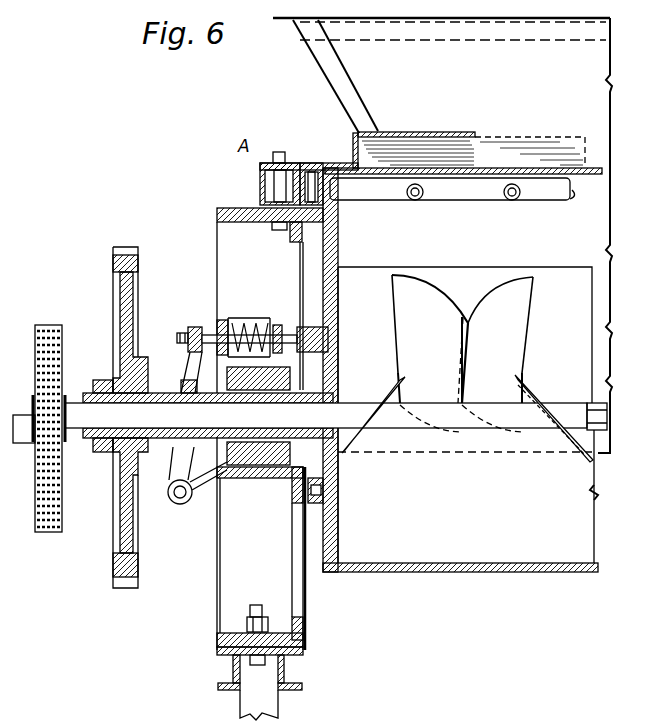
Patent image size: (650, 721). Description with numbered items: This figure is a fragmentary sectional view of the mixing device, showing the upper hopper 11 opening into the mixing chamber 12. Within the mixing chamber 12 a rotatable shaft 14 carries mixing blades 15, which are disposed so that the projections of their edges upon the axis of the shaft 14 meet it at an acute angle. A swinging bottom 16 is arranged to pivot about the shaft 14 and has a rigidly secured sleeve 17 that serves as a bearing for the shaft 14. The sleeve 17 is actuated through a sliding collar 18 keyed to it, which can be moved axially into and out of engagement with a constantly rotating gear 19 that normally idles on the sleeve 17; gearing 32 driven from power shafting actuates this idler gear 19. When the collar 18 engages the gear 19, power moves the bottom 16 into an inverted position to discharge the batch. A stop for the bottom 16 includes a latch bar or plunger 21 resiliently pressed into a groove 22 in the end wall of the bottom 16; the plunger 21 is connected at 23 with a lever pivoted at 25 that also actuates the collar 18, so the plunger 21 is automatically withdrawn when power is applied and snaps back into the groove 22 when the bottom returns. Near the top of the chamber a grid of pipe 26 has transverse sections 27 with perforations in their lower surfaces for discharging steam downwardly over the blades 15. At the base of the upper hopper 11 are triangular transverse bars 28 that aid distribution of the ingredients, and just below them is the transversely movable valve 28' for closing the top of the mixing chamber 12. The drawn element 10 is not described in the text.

The base plate 10 is at (217, 218).
The upper hopper 11 is at (328, 76).
The mixing chamber 12 is at (470, 524).
The rotatable shaft 14 is at (596, 405).
The mixing blades 15 is at (471, 305).
The swinging bottom 16 is at (375, 572).
The sleeve 17 is at (95, 440).
The sliding collar 18 is at (184, 388).
The gear 19 is at (113, 566).
The latch bar or plunger 21 is at (213, 333).
The groove 22 is at (334, 335).
The connection 23 is at (183, 335).
The pivot 25 is at (188, 501).
The grid of pipe 26 is at (262, 198).
The transverse sections 27 is at (414, 202).
The triangular transverse bars 28 is at (463, 145).
The transversely movable valve 28' is at (465, 194).
The gearing 32 is at (35, 468).